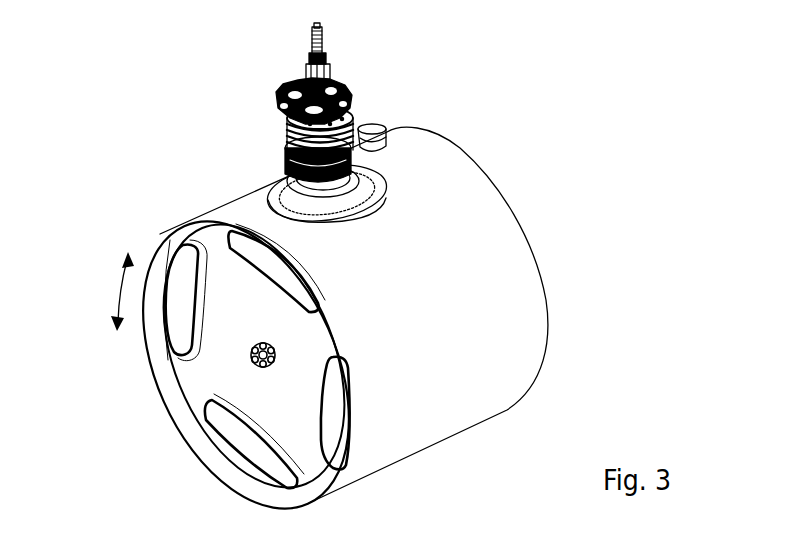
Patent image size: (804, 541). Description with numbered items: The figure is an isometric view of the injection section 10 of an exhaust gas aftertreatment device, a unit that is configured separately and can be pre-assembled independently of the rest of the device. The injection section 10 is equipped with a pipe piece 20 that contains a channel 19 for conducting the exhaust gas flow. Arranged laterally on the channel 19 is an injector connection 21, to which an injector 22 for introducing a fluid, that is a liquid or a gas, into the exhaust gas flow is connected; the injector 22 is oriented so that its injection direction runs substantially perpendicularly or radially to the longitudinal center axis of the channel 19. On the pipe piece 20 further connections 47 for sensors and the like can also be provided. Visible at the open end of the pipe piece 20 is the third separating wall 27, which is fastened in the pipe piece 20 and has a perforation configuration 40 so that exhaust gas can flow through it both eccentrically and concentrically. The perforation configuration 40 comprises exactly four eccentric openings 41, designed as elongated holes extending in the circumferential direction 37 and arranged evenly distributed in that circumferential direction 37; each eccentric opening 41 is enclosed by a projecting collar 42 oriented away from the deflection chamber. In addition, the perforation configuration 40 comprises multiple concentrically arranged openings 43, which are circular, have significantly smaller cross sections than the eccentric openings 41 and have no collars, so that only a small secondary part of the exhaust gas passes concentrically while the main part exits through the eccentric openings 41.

The injection section 10 is at (592, 156).
The pipe piece 20 is at (467, 167).
The channel 19 is at (163, 371).
The third separating wall 27 is at (186, 408).
The circumferential direction 37 is at (118, 291).
The perforation configuration 40 is at (286, 340).
The eccentric openings 41 is at (263, 262).
The projecting collar 42 is at (197, 317).
The concentric openings 43 is at (267, 373).
The injector connection 21 is at (302, 182).
The injector 22 is at (312, 72).
The further connections 47 is at (375, 127).